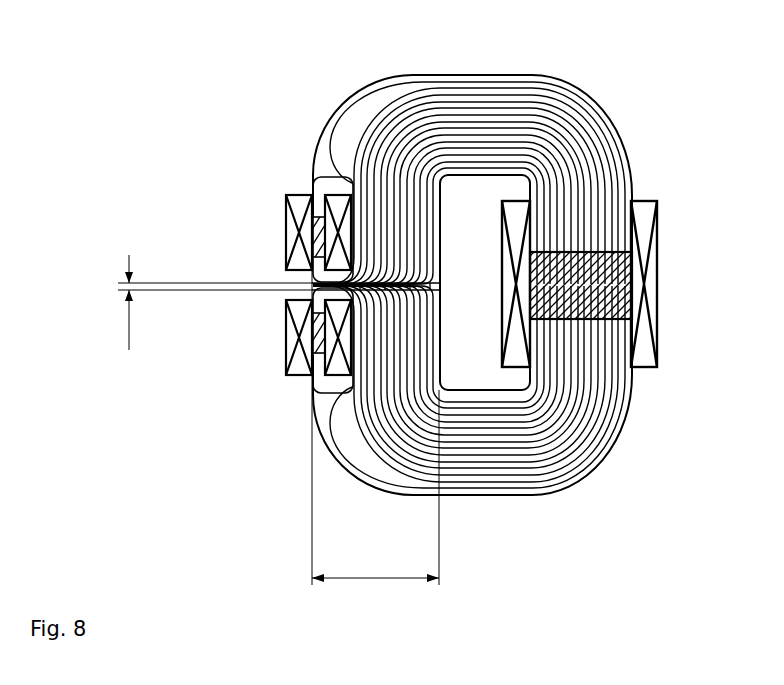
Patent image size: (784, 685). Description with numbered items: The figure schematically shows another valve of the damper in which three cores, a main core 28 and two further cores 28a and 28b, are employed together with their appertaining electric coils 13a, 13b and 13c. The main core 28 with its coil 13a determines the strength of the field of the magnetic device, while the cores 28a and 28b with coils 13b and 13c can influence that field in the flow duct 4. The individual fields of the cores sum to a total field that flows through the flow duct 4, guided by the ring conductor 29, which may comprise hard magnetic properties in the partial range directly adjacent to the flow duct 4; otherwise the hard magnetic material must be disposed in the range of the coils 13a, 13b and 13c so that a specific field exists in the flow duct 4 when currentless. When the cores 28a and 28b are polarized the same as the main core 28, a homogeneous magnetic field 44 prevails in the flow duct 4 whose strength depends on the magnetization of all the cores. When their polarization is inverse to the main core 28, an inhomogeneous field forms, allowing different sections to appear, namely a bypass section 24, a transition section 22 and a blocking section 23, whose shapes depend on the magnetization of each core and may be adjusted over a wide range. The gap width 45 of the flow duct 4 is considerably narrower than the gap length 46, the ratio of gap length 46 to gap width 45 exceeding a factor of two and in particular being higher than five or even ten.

The homogeneous magnetic field 44 is at (555, 120).
The ring conductor 29 is at (532, 468).
The transition section 22 is at (320, 392).
The blocking section 23 is at (412, 282).
The electric coil 13b is at (285, 208).
The core 28a is at (316, 215).
The electric coil 13c is at (272, 346).
The core 28b is at (347, 372).
The electric coil 13a is at (648, 272).
The main core 28 is at (630, 247).
The bypass section 24 is at (288, 277).
The flow duct 4 is at (288, 296).
The gap width 45 is at (118, 302).
The gap length 46 is at (375, 390).